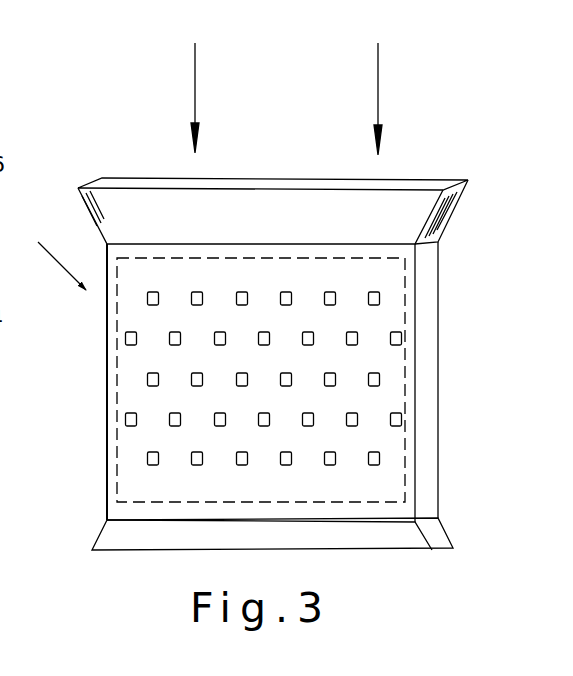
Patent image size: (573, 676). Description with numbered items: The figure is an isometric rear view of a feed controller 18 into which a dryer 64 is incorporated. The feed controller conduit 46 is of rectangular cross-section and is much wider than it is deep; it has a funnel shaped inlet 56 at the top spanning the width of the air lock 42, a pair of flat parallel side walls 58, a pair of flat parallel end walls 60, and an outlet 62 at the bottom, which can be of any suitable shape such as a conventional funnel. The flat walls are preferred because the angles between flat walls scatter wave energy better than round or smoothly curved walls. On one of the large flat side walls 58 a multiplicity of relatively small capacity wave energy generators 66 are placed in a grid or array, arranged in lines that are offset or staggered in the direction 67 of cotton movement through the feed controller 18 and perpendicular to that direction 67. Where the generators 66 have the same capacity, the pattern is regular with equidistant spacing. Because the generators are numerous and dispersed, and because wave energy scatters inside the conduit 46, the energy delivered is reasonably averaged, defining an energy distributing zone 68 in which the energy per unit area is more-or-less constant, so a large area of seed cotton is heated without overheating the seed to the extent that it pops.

The feed controller 18 is at (274, 333).
The air lock 42 is at (10, 70).
The feed controller conduit 46 is at (100, 338).
The funnel shaped inlet 56 is at (400, 179).
The side walls 58 is at (190, 263).
The end walls 60 is at (107, 497).
The outlet 62 is at (370, 545).
The dryer 64 is at (53, 272).
The wave energy generators 66 is at (145, 382).
The direction of movement 67 is at (195, 90).
The energy distributing zone 68 is at (183, 503).